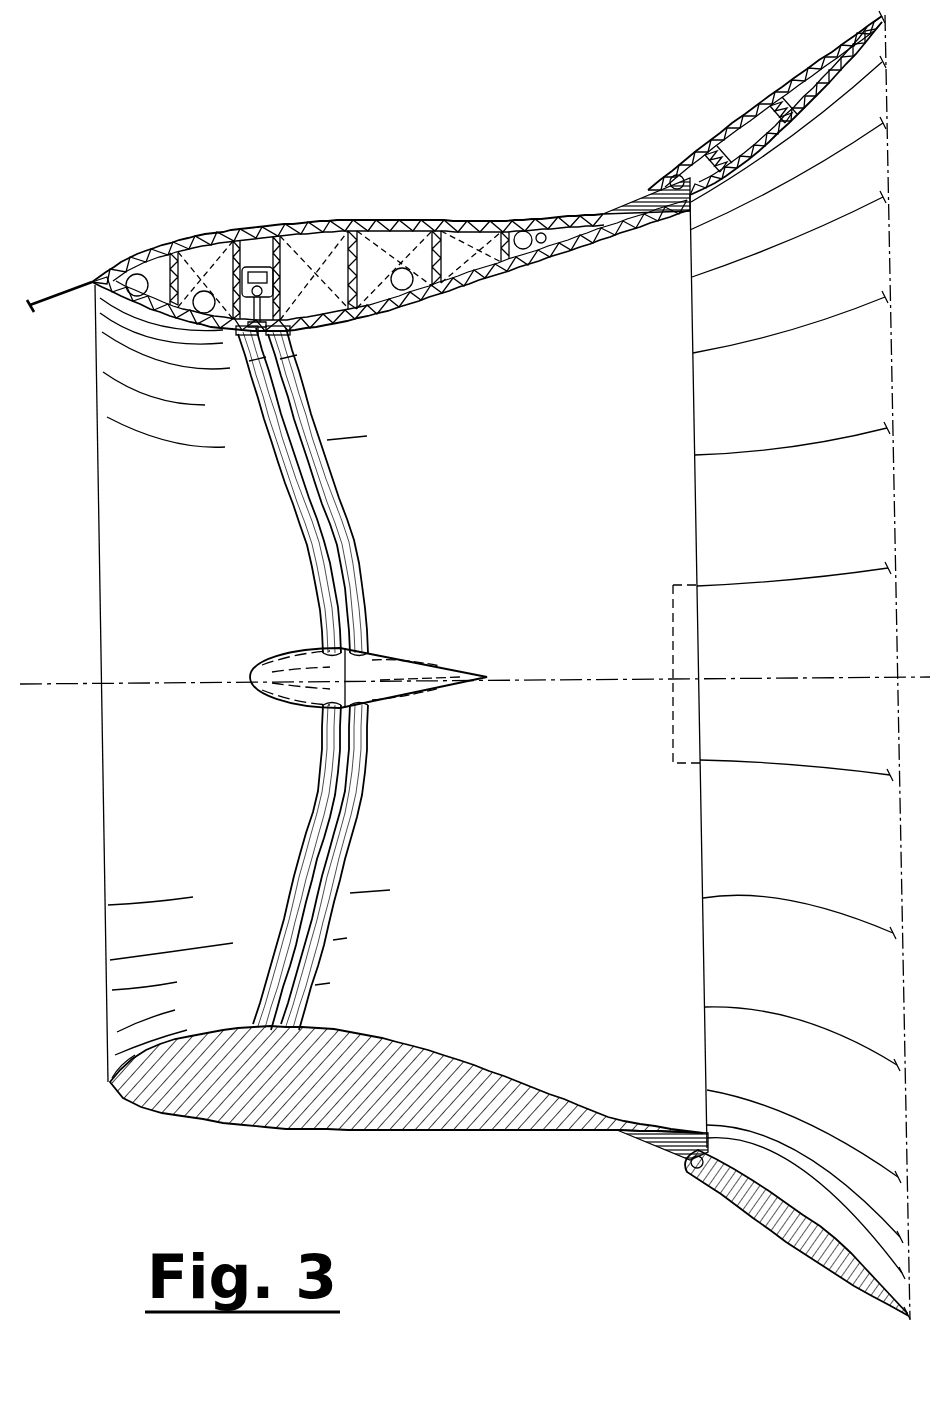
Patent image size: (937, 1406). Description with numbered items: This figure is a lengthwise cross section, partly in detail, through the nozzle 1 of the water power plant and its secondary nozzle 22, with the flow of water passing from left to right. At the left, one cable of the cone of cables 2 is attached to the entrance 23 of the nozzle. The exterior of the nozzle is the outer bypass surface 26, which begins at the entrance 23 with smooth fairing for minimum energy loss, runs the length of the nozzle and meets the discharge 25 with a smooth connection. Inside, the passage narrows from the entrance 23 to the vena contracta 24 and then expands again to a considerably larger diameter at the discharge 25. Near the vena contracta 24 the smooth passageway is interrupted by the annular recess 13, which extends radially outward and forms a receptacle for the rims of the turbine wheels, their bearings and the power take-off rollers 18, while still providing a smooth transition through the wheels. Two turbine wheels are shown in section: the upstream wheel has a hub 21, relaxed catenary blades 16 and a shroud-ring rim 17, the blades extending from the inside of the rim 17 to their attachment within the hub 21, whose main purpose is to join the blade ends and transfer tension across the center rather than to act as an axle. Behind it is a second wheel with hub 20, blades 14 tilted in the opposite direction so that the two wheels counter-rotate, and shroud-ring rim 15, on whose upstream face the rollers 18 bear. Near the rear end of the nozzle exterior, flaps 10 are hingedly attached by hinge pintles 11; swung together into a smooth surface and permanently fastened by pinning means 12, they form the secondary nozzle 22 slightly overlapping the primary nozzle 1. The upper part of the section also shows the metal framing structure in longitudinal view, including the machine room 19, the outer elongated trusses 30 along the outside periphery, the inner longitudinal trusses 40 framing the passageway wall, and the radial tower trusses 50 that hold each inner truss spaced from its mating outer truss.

The nozzle 1 is at (557, 451).
The cone of cables 2 is at (93, 282).
The flaps 10 is at (758, 1270).
The hinge pintles 11 is at (690, 1168).
The pinning means 12 is at (890, 576).
The annular recess 13 is at (297, 360).
The blades 14 is at (333, 470).
The shroud-ring rim 15 is at (282, 331).
The relaxed catenary blades 16 is at (290, 472).
The shroud-ring rim 17 is at (247, 333).
The rollers 18 is at (253, 362).
The machine room 19 is at (257, 278).
The hub 20 is at (385, 653).
The hub 21 is at (275, 655).
The secondary nozzle 22 is at (803, 515).
The entrance 23 is at (108, 1075).
The vena contracta 24 is at (150, 1050).
The discharge 25 is at (690, 1130).
The outer bypass surface 26 is at (313, 1131).
The elongated trusses 30 is at (300, 224).
The inner longitudinal trusses 40 is at (462, 287).
The tower trusses 50 is at (444, 250).